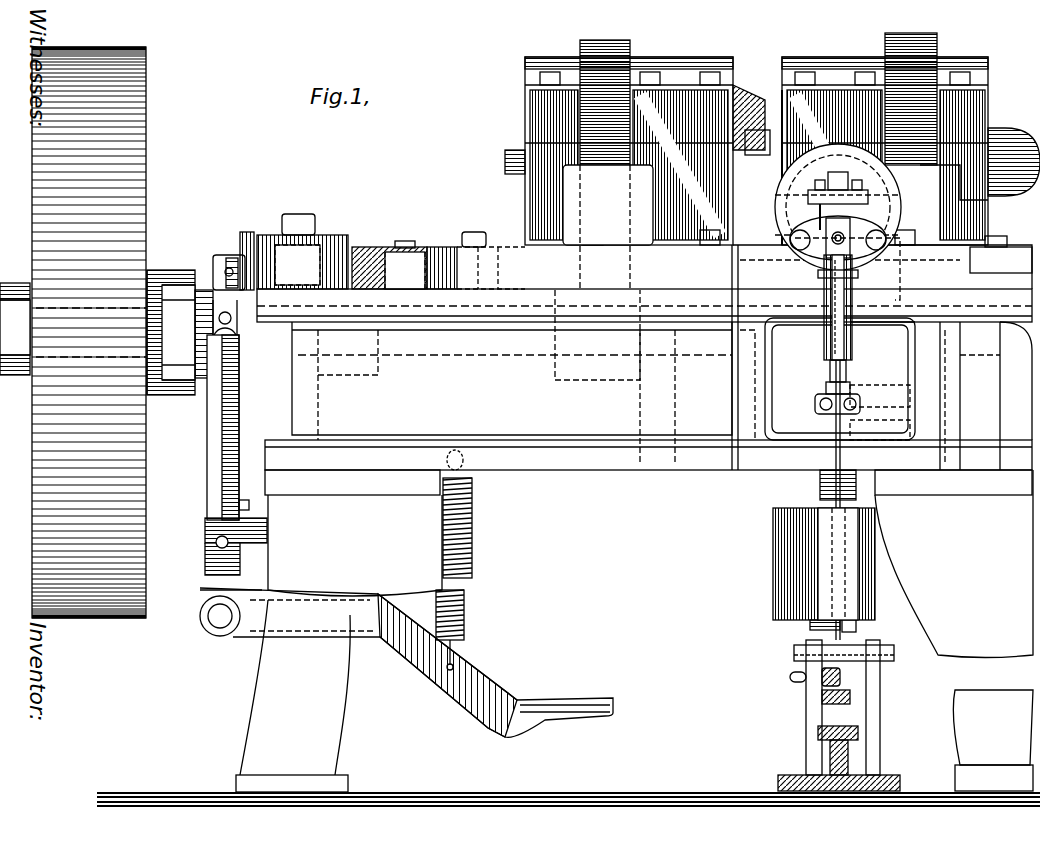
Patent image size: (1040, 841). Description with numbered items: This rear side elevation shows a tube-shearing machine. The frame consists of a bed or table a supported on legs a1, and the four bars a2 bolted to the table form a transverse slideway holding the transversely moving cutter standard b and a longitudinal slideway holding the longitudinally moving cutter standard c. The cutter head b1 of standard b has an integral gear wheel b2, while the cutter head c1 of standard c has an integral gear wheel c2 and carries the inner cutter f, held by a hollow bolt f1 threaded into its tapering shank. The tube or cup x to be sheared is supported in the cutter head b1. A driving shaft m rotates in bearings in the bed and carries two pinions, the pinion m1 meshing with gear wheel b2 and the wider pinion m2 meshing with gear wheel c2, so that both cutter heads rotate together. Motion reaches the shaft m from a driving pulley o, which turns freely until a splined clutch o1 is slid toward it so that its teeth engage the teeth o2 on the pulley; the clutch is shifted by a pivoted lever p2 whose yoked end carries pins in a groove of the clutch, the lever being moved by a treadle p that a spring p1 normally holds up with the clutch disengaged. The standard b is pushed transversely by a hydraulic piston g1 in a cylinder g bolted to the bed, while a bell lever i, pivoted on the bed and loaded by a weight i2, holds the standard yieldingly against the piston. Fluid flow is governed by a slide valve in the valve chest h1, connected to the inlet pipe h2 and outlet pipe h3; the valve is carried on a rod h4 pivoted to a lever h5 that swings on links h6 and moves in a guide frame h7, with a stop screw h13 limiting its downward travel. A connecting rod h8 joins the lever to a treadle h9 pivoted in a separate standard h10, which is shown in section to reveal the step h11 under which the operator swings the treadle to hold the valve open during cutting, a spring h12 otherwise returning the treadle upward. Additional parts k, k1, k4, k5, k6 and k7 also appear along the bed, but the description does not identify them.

The driving pulley o is at (89, 332).
The clutch o1 is at (196, 385).
The teeth upon the driving pulley o2 is at (165, 266).
The bearing block k is at (447, 250).
The bearing block k1 is at (378, 250).
The bearing block k4 is at (355, 247).
The bearing block k5 is at (332, 242).
The post k6 is at (247, 250).
The bracket k7 is at (226, 258).
The bed or table a is at (644, 304).
The legs a1 is at (616, 616).
The bars a2 is at (768, 290).
The driving shaft m is at (492, 366).
The pinion m1 is at (942, 380).
The pinion m2 is at (595, 388).
The longitudinally moving cutter standard c is at (629, 138).
The cutter head c1 is at (749, 117).
The gear wheel c2 is at (608, 128).
The inner cutter f is at (757, 131).
The bolt f1 is at (505, 160).
The transversely moving cutter standard b is at (898, 137).
The cutter head b1 is at (782, 100).
The gear wheel b2 is at (911, 85).
The tube or cup x is at (1014, 162).
The cylinder g is at (847, 207).
The hydraulic piston g1 is at (855, 258).
The valve chest h1 is at (805, 212).
The inlet pipe h2 is at (845, 238).
The outlet pipe h3 is at (896, 310).
The rod h4 is at (838, 176).
The lever h5 is at (828, 360).
The links h6 is at (824, 330).
The guide frame h7 is at (850, 372).
The connecting rod h8 is at (834, 452).
The treadle h9 is at (800, 684).
The treadle standard h10 is at (850, 754).
The step h11 is at (850, 688).
The spring h12 is at (856, 484).
The stop screw h13 is at (815, 405).
The bell lever i is at (905, 396).
The weight i2 is at (773, 552).
The treadle p is at (205, 592).
The spring p1 is at (468, 560).
The pivoted lever p2 is at (210, 462).